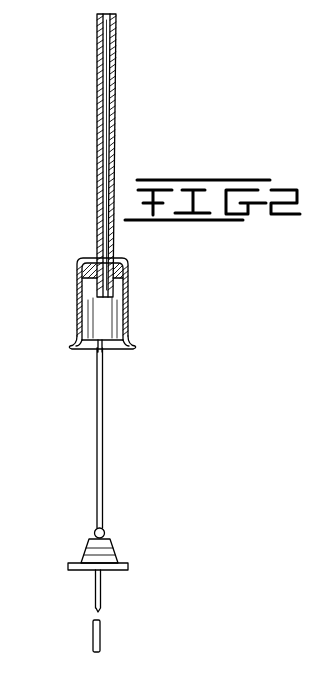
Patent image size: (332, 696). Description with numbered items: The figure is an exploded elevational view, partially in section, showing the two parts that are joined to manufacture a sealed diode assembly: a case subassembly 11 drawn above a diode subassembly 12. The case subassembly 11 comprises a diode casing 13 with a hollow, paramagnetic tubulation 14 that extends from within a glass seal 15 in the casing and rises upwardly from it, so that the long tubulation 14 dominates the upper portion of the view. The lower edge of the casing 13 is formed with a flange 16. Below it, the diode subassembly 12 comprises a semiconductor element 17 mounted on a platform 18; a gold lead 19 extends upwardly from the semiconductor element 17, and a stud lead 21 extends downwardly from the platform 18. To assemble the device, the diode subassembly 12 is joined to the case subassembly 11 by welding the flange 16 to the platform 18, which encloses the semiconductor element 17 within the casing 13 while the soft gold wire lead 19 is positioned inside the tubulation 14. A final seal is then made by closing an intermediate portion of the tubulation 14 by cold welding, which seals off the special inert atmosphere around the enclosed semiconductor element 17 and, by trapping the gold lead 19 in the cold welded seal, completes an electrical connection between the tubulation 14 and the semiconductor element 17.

The case subassembly 11 is at (97, 173).
The diode subassembly 12 is at (95, 492).
The diode casing 13 is at (130, 303).
The tubulation 14 is at (116, 243).
The glass seal 15 is at (124, 270).
The flange 16 is at (130, 341).
The semiconductor element 17 is at (104, 532).
The platform 18 is at (128, 568).
The gold lead 19 is at (103, 430).
The stud lead 21 is at (100, 637).